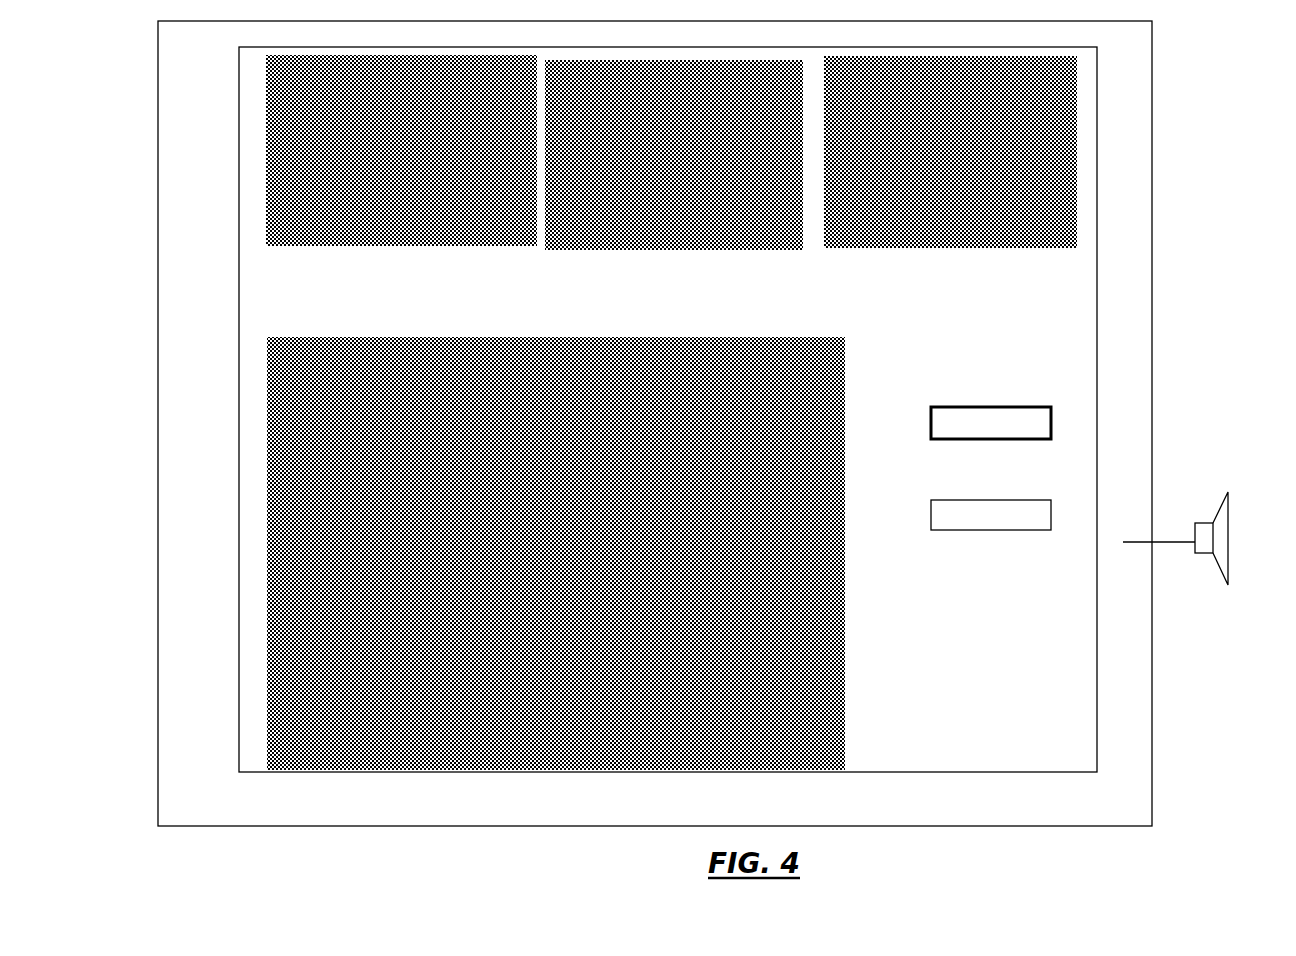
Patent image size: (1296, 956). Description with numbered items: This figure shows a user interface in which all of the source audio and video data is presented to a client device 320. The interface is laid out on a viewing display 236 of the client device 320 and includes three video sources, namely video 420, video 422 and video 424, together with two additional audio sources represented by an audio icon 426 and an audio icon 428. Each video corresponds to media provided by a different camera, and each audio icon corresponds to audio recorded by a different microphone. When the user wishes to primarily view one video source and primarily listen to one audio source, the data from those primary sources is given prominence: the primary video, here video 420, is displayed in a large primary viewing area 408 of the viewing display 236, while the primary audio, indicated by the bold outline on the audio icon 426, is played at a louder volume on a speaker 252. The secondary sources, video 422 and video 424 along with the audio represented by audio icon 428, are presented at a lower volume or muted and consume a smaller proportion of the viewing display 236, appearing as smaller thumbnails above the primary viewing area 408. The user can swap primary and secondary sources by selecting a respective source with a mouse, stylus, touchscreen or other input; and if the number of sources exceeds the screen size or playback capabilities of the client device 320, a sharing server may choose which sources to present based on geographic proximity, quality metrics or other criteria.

The client device 320 is at (1151, 155).
The viewing display 236 is at (1097, 248).
The video 424 is at (418, 247).
The video 422 is at (693, 250).
The video 420 is at (1010, 249).
The primary viewing area 408 is at (846, 558).
The audio icon 426 is at (947, 407).
The audio icon 428 is at (931, 503).
The speaker 252 is at (1202, 523).